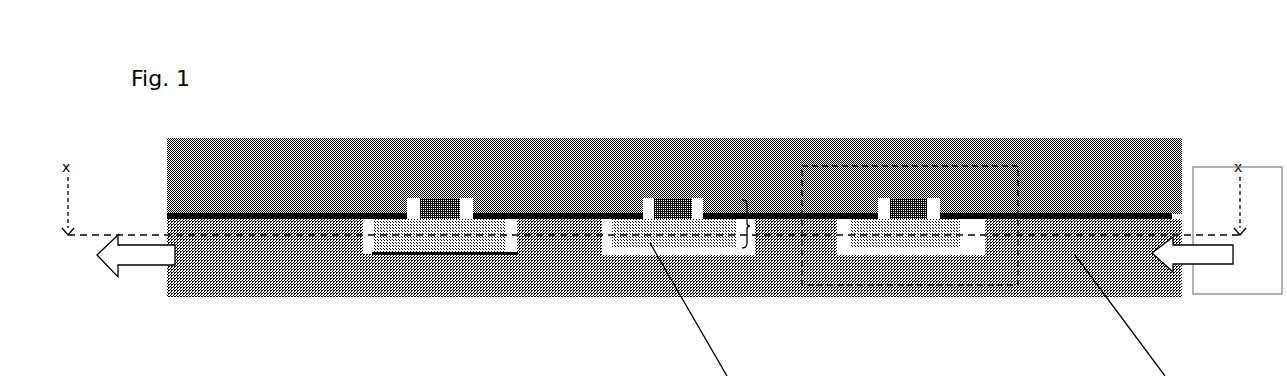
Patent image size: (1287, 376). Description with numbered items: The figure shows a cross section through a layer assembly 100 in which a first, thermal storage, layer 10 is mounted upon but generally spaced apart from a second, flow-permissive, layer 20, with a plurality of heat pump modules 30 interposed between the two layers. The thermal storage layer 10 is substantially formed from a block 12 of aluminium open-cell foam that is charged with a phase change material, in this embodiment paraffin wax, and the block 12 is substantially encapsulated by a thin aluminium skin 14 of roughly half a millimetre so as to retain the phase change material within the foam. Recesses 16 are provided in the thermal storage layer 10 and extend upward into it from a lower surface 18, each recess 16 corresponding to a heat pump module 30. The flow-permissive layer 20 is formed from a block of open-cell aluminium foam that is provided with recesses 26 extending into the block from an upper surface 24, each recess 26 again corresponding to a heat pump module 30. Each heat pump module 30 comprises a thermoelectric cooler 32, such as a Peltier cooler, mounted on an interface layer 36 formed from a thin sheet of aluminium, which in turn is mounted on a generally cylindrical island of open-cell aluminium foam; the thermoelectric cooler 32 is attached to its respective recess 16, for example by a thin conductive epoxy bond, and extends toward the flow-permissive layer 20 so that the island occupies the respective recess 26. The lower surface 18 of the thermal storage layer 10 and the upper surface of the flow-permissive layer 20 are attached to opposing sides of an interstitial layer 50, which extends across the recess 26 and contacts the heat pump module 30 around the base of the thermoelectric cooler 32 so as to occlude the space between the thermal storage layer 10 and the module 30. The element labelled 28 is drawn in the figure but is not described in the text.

The layer assembly 100 is at (1120, 110).
The first, thermal storage, layer 10 is at (165, 218).
The block 12 is at (238, 158).
The skin 14 is at (404, 192).
The recesses 16 is at (463, 205).
The lower surface 18 is at (555, 216).
The second, flow-permissive, layer 20 is at (165, 227).
The upper surface 24 is at (515, 216).
The recesses 26 is at (372, 243).
The lower component 28 is at (555, 373).
The heat pump module 30 is at (750, 226).
The thermoelectric cooler (TEC) 32 is at (687, 197).
The interface layer 36 is at (705, 219).
The interstitial layer 50 is at (288, 213).